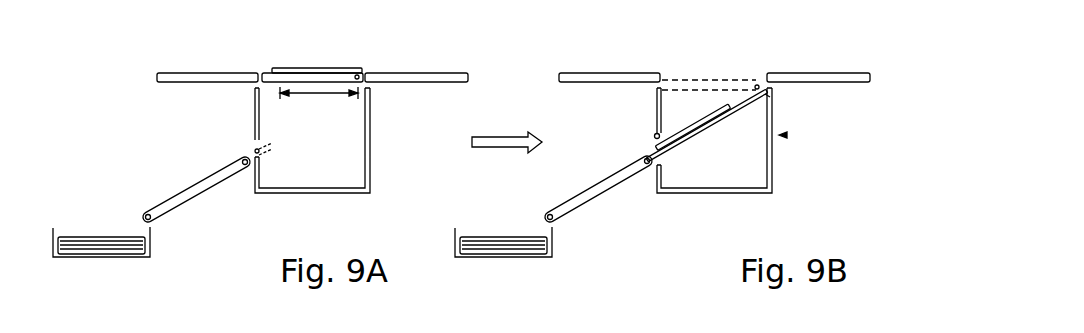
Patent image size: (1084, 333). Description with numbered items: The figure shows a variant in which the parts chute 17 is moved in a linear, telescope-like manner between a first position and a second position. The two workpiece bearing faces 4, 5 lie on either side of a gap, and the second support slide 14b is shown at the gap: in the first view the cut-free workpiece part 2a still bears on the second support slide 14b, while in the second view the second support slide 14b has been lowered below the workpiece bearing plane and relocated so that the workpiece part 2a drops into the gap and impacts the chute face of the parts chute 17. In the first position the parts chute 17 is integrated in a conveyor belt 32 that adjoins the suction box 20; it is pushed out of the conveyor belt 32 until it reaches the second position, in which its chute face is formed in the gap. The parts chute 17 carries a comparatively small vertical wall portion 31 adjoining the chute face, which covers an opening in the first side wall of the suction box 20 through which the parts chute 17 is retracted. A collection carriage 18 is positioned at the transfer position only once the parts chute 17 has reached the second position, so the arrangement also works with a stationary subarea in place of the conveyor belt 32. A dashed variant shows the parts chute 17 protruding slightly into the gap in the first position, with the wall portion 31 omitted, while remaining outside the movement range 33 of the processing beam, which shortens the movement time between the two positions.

In FIG. 9A, the workpiece bearing face 4 is at (195, 73).
In FIG. 9B, the workpiece bearing face 4 is at (601, 73).
In FIG. 9A, the workpiece bearing face 5 is at (428, 72).
In FIG. 9B, the workpiece bearing face 5 is at (826, 72).
In FIG. 9A, the workpiece part 2a is at (342, 68).
In FIG. 9B, the workpiece part 2a is at (696, 127).
In FIG. 9A, the second support slide 14b is at (292, 68).
In FIG. 9B, the second support slide 14b is at (700, 88).
In FIG. 9A, the movement range 33 is at (320, 92).
In FIG. 9A, the vertical wall portion 31 is at (270, 152).
In FIG. 9B, the vertical wall portion 31 is at (770, 95).
In FIG. 9A, the parts chute 17 is at (255, 152).
In FIG. 9B, the parts chute 17 is at (652, 137).
In FIG. 9A, the conveyor belt 32 is at (182, 197).
In FIG. 9B, the conveyor belt 32 is at (585, 195).
In FIG. 9A, the collection carriage 18 is at (153, 237).
In FIG. 9B, the collection carriage 18 is at (555, 237).
In FIG. 9B, the suction box 20 is at (787, 135).